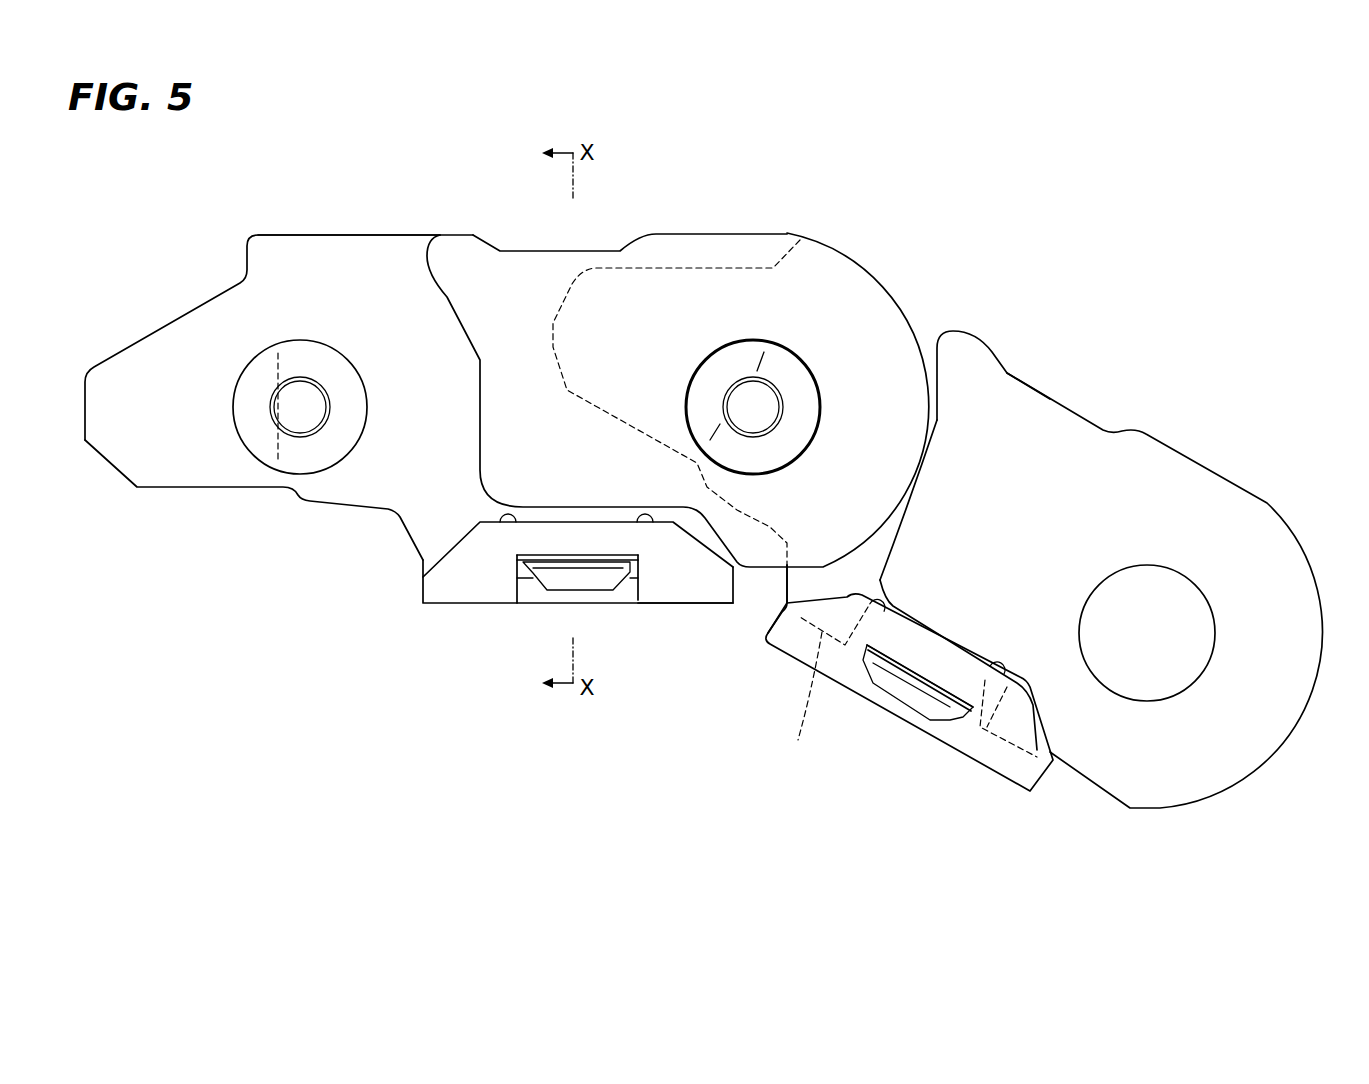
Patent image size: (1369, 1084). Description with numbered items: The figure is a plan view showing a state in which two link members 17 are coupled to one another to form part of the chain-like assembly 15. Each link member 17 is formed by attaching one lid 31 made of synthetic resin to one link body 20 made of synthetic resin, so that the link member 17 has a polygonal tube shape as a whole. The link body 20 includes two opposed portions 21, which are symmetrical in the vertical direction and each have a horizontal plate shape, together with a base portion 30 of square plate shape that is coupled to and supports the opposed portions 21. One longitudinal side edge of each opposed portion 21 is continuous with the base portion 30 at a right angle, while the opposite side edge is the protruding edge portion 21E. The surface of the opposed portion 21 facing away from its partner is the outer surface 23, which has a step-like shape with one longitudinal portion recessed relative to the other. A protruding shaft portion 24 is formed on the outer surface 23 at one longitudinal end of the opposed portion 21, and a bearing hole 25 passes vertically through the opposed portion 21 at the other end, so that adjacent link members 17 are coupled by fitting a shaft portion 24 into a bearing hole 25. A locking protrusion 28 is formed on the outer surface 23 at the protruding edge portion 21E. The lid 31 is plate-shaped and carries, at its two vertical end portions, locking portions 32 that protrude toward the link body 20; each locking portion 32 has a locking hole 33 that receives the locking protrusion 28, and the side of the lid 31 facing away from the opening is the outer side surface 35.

The link assembly 15 is at (1078, 190).
The link member 17 is at (355, 680).
The link body 20 is at (253, 487).
The opposed portion 21 is at (388, 277).
The protruding edge portion 21E is at (797, 704).
The outer surface 23 is at (290, 265).
The shaft portion 24 is at (265, 377).
The bearing hole 25 is at (765, 338).
The locking protrusion 28 is at (547, 580).
The base portion 30 is at (588, 250).
The lid 31 is at (433, 588).
The locking portion 32 is at (685, 583).
The locking hole 33 is at (533, 557).
The outer side surface 35 is at (660, 603).